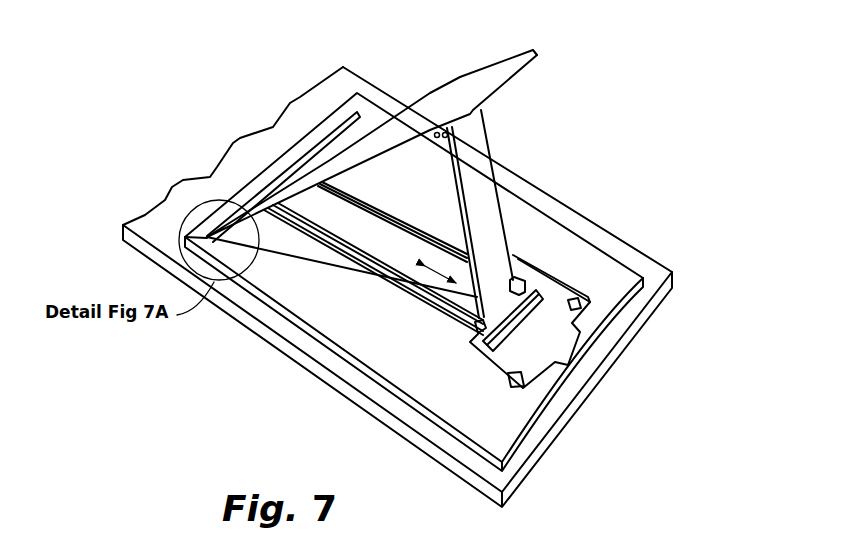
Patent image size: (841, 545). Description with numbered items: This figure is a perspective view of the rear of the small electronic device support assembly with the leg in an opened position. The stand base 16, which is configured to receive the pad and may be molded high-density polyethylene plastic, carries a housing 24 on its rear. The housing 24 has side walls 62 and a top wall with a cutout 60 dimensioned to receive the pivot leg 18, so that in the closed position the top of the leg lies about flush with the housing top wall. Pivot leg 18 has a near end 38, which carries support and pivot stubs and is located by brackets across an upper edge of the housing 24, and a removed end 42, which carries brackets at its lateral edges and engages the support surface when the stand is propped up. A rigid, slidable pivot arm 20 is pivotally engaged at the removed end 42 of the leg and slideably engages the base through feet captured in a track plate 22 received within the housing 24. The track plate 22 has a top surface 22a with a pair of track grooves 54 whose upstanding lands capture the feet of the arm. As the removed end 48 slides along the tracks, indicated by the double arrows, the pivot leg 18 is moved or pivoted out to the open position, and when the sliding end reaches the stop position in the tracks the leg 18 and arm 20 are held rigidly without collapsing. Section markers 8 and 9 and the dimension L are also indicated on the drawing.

The stand base 16 is at (266, 330).
The pivot leg 18 is at (383, 146).
The pivot arm 20 is at (492, 205).
The track plate 22 is at (552, 308).
The top surface of track plate 22a is at (553, 347).
The housing 24 is at (580, 253).
The near end of pivot leg 38 is at (253, 193).
The removed end of pivot leg 42 is at (513, 77).
The removed end 48 is at (490, 102).
The track grooves 54 is at (432, 247).
The cutout 60 is at (425, 322).
The side walls 62 is at (453, 435).
The section line 8- 8 is at (200, 130).
The section line 9- 9 is at (510, 183).
The length dimension L is at (520, 503).